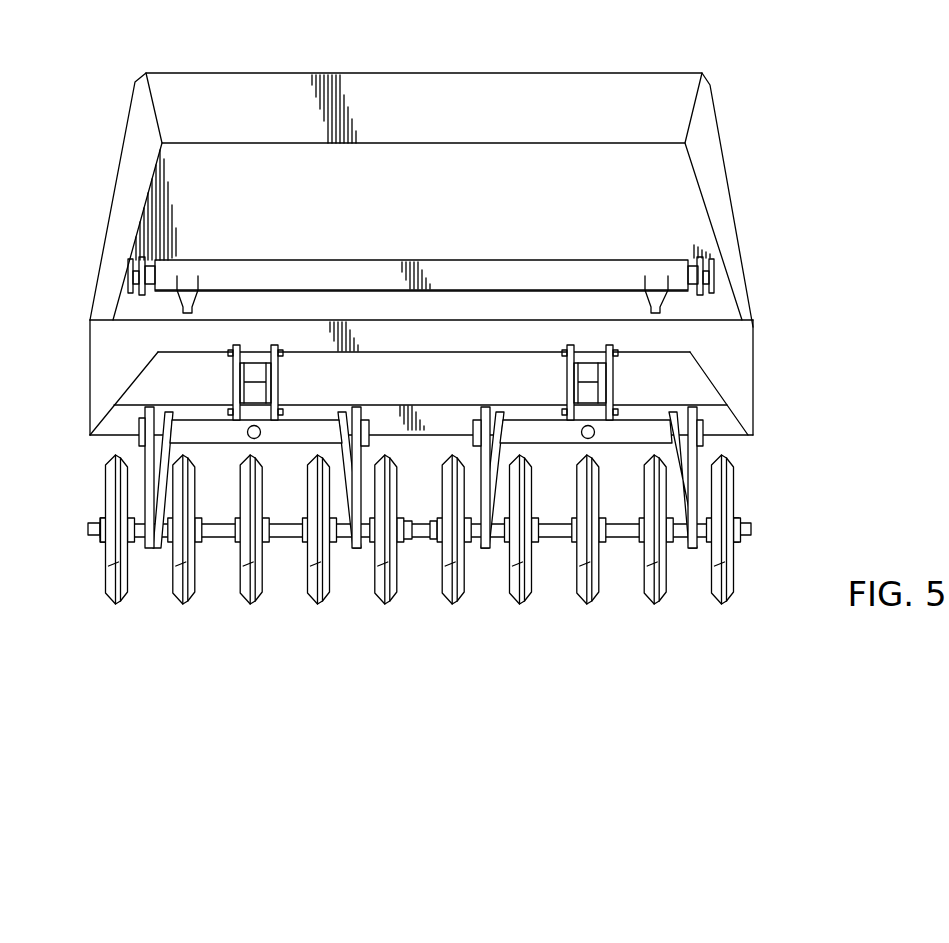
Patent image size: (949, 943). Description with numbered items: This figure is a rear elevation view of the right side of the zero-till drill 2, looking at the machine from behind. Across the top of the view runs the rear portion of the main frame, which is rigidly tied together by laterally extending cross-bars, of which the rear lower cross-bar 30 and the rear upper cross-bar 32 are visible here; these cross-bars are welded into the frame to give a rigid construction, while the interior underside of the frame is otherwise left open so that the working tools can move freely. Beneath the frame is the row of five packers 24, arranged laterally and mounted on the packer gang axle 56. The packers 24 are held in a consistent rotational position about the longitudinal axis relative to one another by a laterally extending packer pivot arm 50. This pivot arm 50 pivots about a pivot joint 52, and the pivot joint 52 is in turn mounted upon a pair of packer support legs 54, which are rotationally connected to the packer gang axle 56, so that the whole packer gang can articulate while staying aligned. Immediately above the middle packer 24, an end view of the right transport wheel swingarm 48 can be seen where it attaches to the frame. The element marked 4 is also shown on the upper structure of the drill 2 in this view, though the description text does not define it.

The zero-till drill 2 is at (776, 228).
The hopper 4 is at (733, 197).
The packer wheels 24 is at (107, 549).
The rear lower cross-bar 30 is at (744, 421).
The rear upper cross-bar 32 is at (754, 338).
The right transport wheel swingarm 48 is at (594, 393).
The packer pivot arm 50 is at (524, 419).
The pivot joint 52 is at (582, 432).
The packer support legs 54 is at (485, 462).
The packer gang axle 56 is at (620, 524).